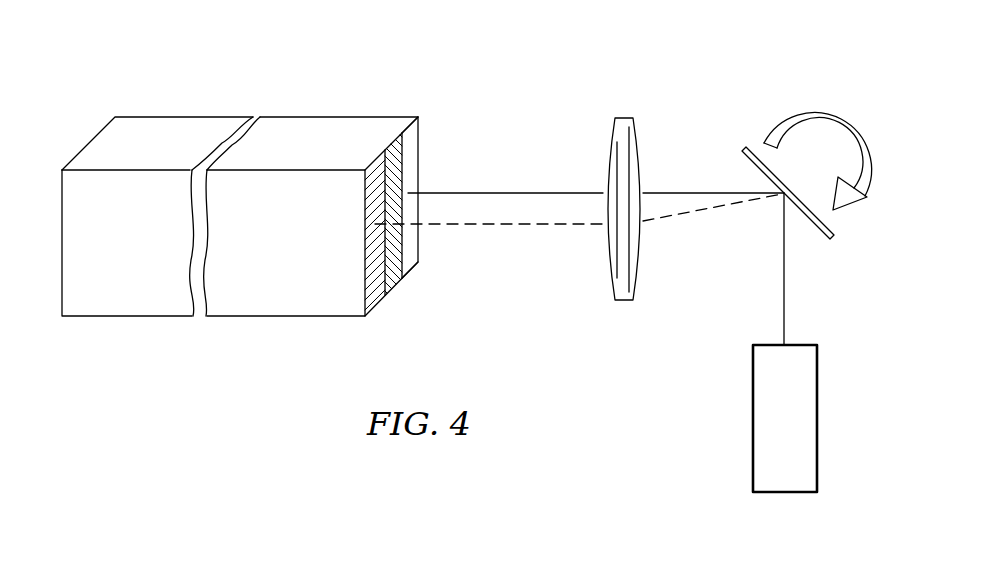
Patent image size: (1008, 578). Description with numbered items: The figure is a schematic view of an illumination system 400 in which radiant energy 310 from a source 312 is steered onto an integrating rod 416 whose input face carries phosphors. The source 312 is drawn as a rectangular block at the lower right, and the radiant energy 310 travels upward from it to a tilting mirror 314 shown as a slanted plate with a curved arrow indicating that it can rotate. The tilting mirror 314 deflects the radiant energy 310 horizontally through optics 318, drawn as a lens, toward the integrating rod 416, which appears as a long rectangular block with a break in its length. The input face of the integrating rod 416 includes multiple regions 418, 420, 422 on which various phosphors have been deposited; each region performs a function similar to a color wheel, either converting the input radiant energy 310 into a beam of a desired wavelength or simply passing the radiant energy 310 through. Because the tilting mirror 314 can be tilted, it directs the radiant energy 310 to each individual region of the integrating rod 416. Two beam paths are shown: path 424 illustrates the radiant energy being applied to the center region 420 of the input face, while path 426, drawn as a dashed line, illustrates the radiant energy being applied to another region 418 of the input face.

The illumination system 400 is at (526, 66).
The integrating rod 416 is at (180, 120).
The region 418 is at (376, 289).
The center region 420 is at (396, 265).
The region 422 is at (412, 161).
The path 424 is at (528, 192).
The path 426 is at (513, 226).
The optics 318 is at (624, 117).
The tilting mirror 314 is at (832, 240).
The radiant energy 310 is at (786, 288).
The laser source 312 is at (817, 417).